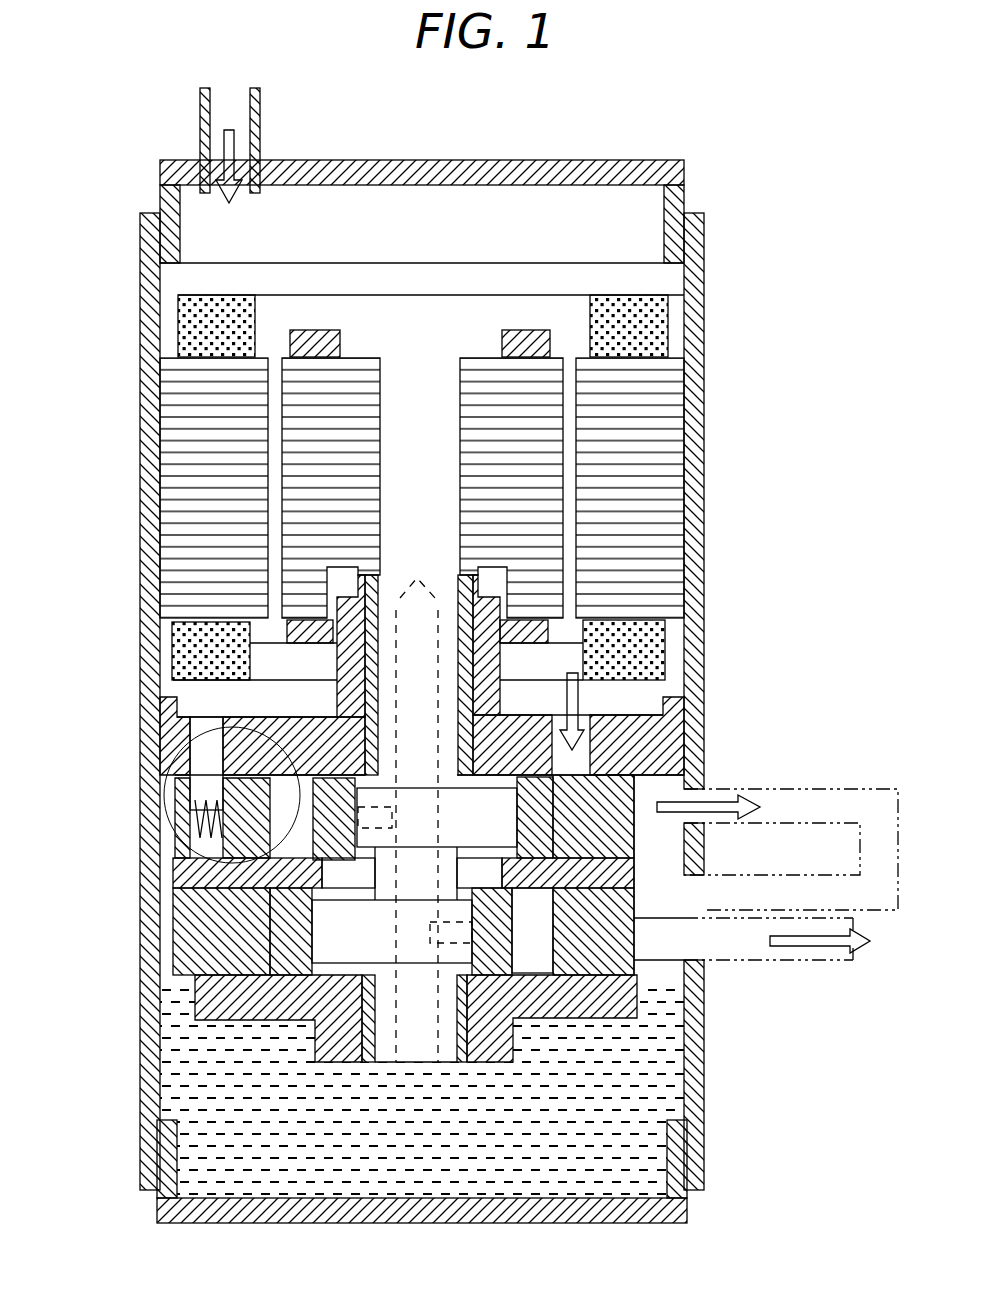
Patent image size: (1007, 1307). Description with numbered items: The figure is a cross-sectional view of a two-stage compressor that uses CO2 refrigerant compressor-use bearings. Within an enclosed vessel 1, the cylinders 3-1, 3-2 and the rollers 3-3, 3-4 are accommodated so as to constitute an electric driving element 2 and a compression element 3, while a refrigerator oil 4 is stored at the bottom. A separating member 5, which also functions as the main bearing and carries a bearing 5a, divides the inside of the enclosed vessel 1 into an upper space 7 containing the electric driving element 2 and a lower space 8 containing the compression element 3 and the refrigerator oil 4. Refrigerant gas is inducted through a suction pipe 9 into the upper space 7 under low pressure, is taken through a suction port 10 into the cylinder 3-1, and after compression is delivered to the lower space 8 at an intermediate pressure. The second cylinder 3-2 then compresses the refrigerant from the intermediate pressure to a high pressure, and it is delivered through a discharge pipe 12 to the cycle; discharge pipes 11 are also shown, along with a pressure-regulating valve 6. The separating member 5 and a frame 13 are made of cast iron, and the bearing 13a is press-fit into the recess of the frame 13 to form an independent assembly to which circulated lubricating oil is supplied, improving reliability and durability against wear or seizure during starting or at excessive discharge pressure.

The enclosed vessel 1 is at (704, 364).
The electric driving element 2 is at (652, 528).
The compression element 3 is at (173, 874).
The cylinder 3-1 is at (643, 793).
The second cylinder 3-2 is at (188, 932).
The roller 3-3 is at (173, 843).
The roller 3-4 is at (550, 945).
The refrigerator oil 4 is at (190, 1058).
The separating member 5 is at (645, 738).
The bearing 5a is at (503, 663).
The pressure-regulating valve 6 is at (165, 797).
The upper space 7 is at (573, 263).
The lower space 8 is at (657, 880).
The suction pipe 9 is at (202, 135).
The suction port 10 is at (607, 737).
The discharge pipes 11 is at (820, 788).
The discharge pipe 12 is at (787, 952).
The frame 13 is at (533, 942).
The bearing 13a is at (467, 1027).